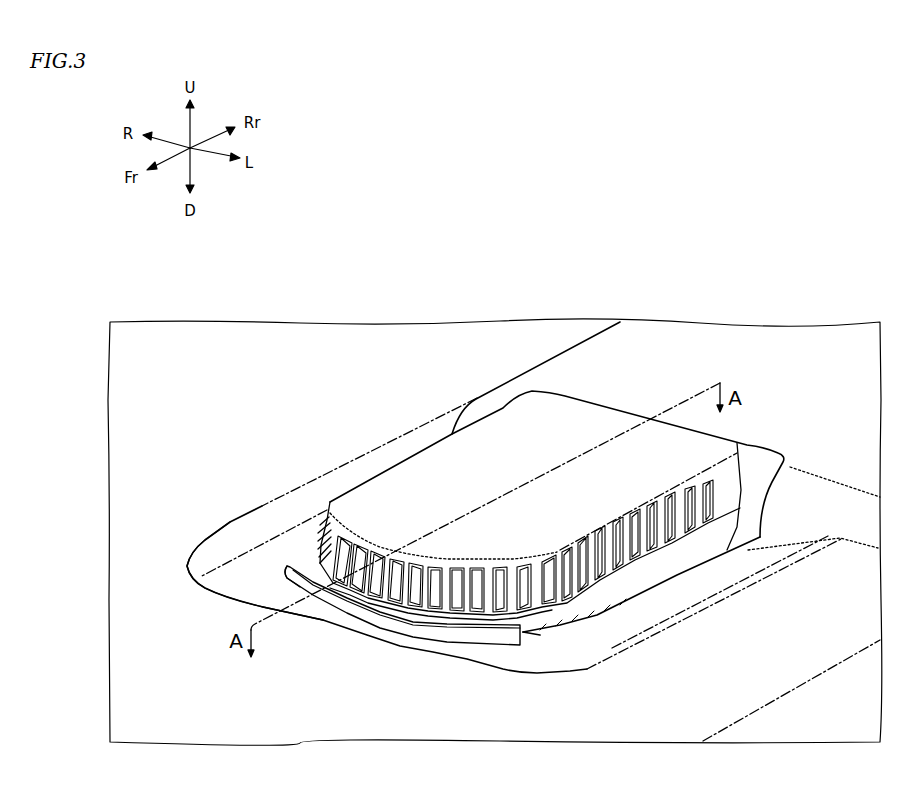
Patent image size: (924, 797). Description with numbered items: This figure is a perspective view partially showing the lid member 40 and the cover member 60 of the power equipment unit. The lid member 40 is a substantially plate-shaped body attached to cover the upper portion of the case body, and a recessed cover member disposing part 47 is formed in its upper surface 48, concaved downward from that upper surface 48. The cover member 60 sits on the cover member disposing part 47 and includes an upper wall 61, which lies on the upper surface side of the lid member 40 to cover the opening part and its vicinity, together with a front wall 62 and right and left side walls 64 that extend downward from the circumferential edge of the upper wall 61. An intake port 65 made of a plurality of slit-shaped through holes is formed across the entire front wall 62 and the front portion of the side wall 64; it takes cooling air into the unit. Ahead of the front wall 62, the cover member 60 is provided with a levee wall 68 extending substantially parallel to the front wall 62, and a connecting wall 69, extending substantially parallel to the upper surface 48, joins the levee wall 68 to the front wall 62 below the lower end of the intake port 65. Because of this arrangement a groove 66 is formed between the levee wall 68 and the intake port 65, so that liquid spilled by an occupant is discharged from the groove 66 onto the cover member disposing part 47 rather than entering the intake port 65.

The lid member 40 is at (108, 532).
The cover member disposing part 47 is at (310, 537).
The upper surface 48 is at (148, 640).
The cover member 60 is at (383, 470).
The upper wall 61 is at (457, 477).
The front wall 62 is at (452, 614).
The side wall 64 is at (620, 583).
The intake port 65 is at (406, 612).
The groove 66 is at (255, 571).
The levee wall 68 is at (495, 635).
The connecting wall 69 is at (307, 571).